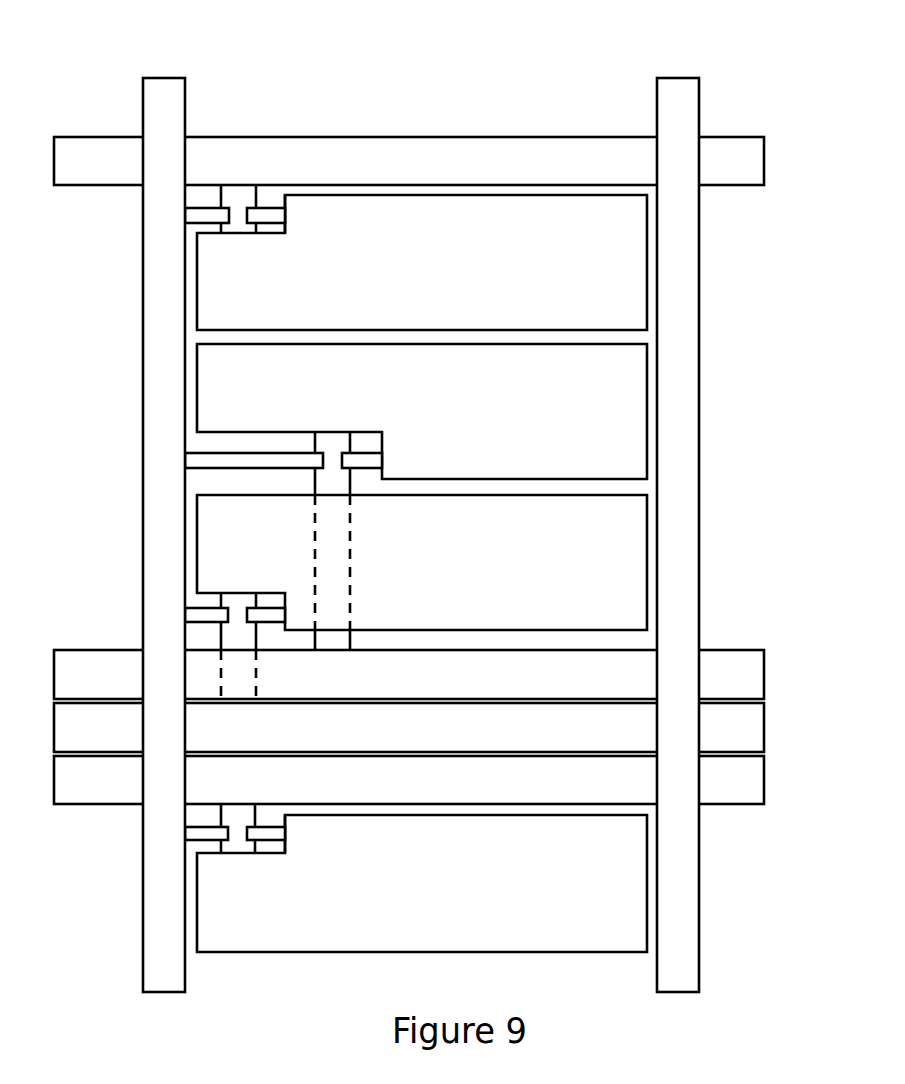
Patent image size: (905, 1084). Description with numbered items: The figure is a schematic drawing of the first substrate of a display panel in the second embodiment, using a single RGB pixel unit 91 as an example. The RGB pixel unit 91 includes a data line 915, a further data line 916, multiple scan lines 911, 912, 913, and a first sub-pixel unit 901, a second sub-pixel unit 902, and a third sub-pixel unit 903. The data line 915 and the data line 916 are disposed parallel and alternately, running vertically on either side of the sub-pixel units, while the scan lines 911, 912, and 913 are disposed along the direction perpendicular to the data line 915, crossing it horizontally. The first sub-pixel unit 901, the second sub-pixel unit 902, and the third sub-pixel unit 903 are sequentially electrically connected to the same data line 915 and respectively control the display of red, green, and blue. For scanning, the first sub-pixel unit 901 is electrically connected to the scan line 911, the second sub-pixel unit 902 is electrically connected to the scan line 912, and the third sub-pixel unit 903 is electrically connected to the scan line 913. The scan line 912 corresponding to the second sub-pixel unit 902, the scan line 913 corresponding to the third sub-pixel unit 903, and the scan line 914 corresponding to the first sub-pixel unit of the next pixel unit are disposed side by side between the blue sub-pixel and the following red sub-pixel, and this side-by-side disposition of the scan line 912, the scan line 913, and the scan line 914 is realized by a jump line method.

The RGB pixel unit 91 is at (454, 501).
The first sub-pixel unit 901 is at (660, 238).
The second sub-pixel unit 902 is at (660, 384).
The third sub-pixel unit 903 is at (660, 526).
The scan line 911 is at (755, 160).
The scan line 912 is at (752, 676).
The scan line 913 is at (750, 727).
The scan line 914 is at (748, 773).
The data line 915 is at (165, 108).
The data line 916 is at (686, 108).